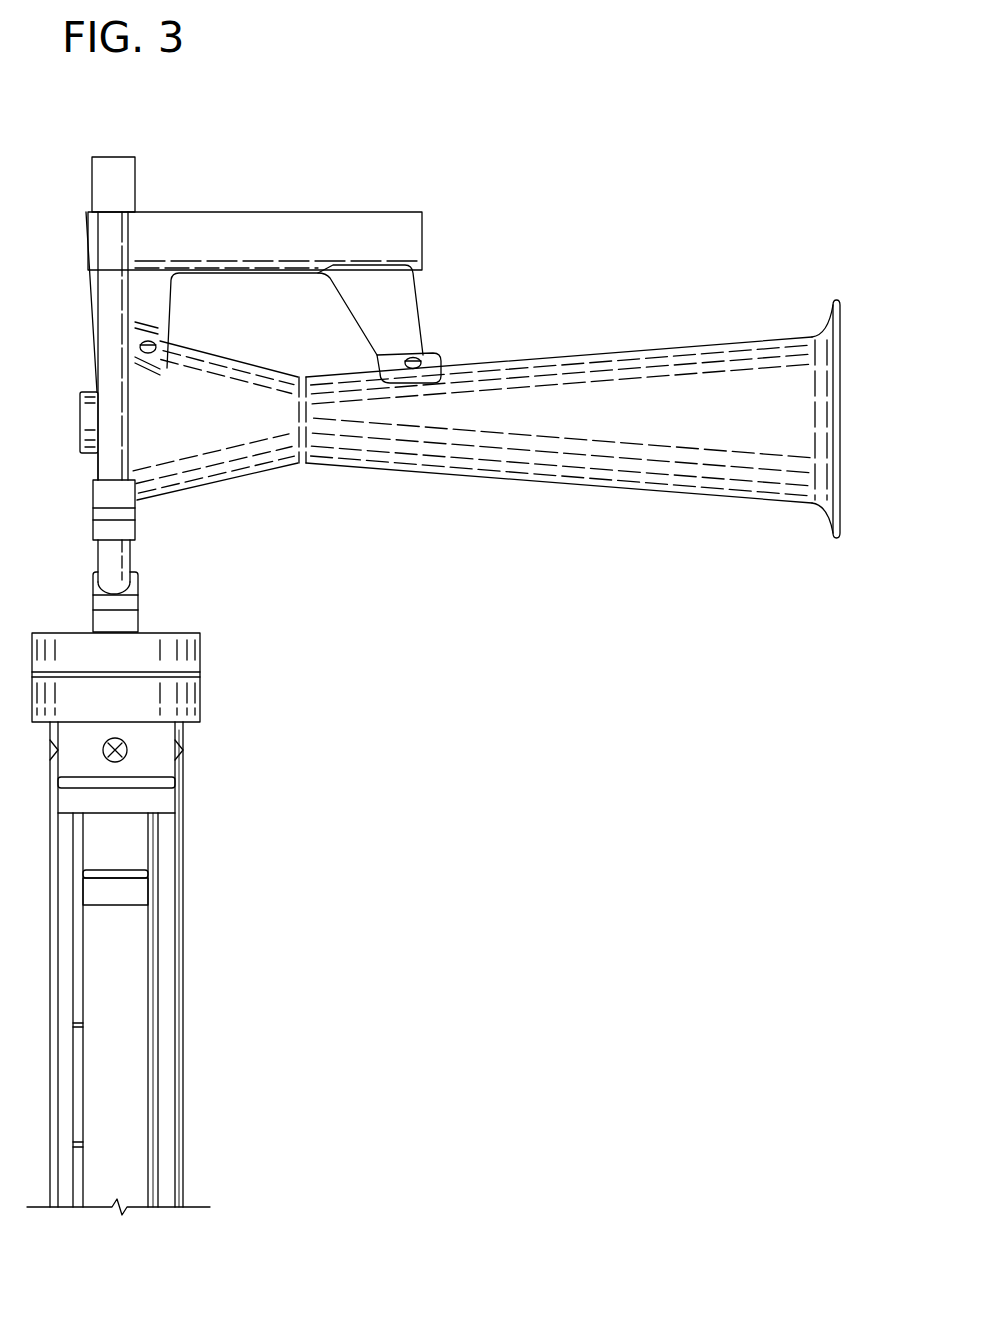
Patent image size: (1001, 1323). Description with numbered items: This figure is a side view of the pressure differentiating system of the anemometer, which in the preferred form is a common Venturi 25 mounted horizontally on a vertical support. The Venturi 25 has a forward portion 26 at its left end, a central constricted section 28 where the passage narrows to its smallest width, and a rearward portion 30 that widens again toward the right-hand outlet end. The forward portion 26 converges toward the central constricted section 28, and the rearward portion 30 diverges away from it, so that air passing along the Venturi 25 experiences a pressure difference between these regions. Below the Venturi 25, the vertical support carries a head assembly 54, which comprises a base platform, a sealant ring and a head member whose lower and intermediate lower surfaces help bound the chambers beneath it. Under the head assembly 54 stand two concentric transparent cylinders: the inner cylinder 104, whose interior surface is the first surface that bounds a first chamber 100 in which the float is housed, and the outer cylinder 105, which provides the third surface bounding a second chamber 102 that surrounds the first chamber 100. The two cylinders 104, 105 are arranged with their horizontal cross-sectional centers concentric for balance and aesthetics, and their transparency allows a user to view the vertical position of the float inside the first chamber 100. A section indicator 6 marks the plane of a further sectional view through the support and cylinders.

The section line 6- 6 is at (145, 554).
The Venturi 25 is at (587, 462).
The forward portion 26 is at (138, 465).
The central constricted section 28 is at (306, 468).
The rearward portion 30 is at (838, 507).
The head assembly 54 is at (222, 675).
The first chamber 100 is at (127, 1062).
The second chamber 102 is at (167, 1089).
The cylinder 104 is at (153, 1127).
The cylinder 105 is at (182, 1157).